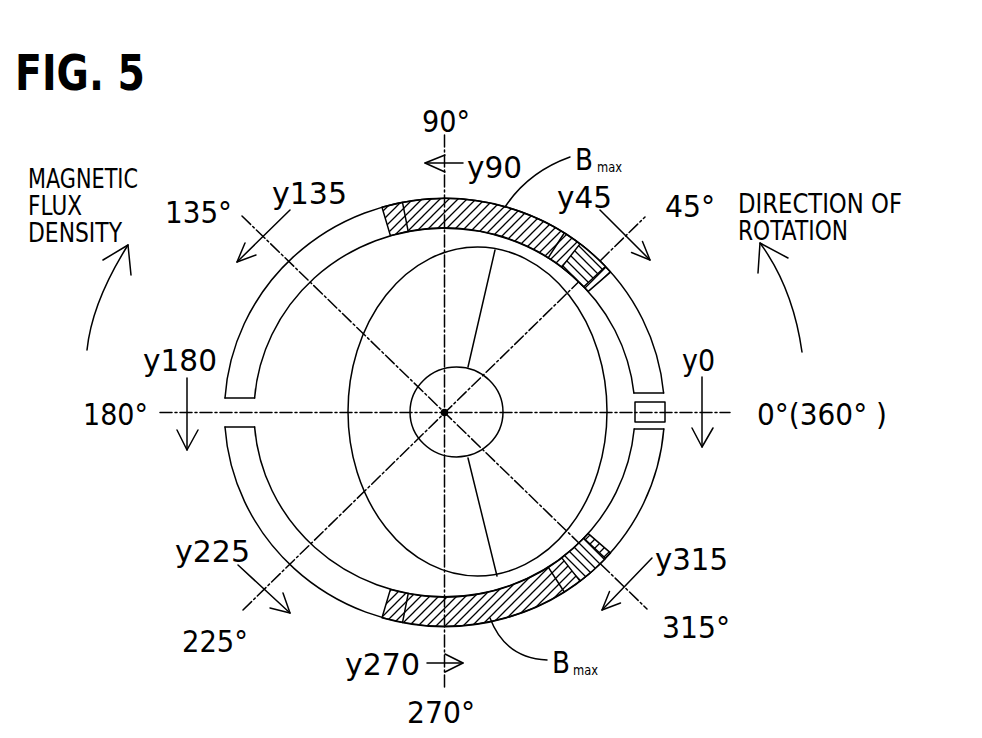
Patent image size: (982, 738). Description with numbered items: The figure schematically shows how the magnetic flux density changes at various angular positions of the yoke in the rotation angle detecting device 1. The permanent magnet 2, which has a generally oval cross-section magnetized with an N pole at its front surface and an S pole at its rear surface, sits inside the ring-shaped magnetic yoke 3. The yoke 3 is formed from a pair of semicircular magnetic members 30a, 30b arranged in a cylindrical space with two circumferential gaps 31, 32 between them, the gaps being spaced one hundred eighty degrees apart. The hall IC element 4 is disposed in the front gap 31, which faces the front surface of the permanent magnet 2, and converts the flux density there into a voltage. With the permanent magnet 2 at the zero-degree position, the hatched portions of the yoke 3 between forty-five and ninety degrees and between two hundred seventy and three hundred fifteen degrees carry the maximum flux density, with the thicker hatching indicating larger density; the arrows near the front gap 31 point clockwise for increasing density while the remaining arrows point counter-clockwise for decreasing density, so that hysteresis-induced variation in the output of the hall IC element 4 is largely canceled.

The rotation angle detecting device 1 is at (643, 110).
The permanent magnet 2 is at (401, 524).
The magnetic yoke 3 is at (375, 228).
The hall IC element 4 is at (635, 408).
The semicircular magnetic member 30a is at (628, 320).
The semicircular magnetic member 30b is at (352, 593).
The front gap 31 is at (634, 426).
The circumferential gap 32 is at (242, 406).